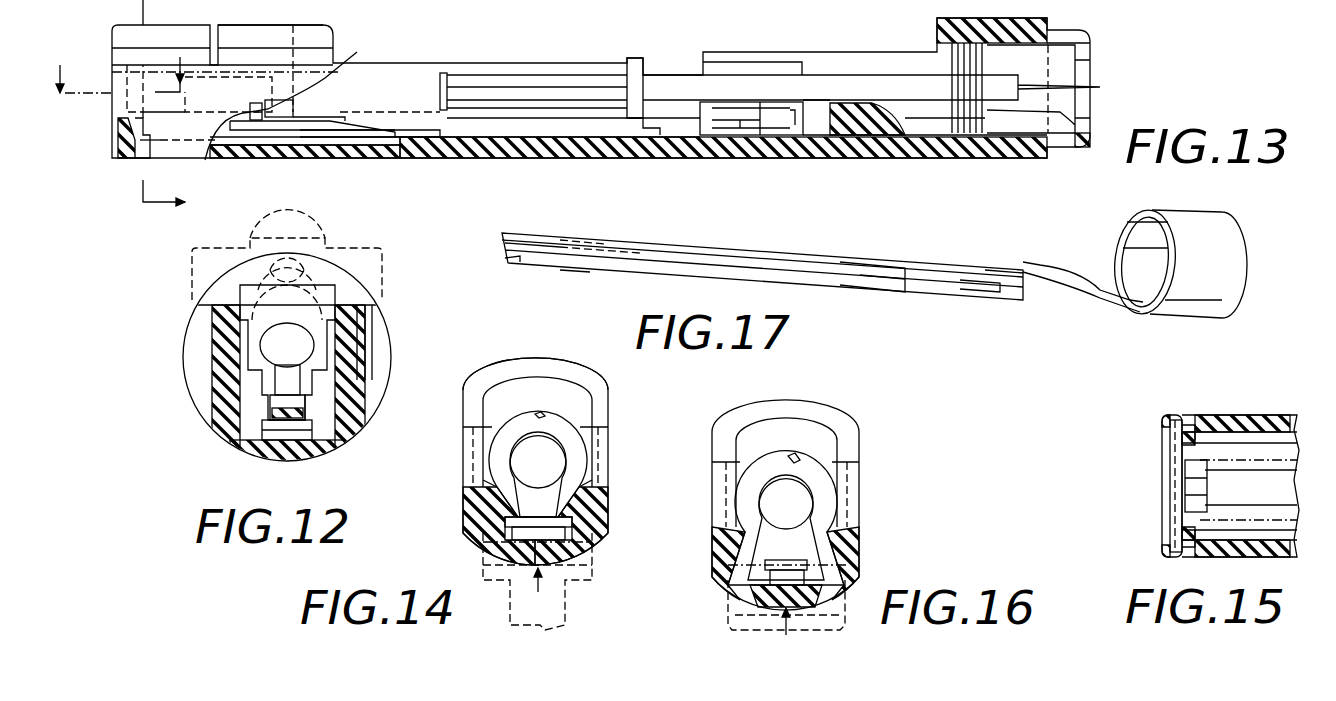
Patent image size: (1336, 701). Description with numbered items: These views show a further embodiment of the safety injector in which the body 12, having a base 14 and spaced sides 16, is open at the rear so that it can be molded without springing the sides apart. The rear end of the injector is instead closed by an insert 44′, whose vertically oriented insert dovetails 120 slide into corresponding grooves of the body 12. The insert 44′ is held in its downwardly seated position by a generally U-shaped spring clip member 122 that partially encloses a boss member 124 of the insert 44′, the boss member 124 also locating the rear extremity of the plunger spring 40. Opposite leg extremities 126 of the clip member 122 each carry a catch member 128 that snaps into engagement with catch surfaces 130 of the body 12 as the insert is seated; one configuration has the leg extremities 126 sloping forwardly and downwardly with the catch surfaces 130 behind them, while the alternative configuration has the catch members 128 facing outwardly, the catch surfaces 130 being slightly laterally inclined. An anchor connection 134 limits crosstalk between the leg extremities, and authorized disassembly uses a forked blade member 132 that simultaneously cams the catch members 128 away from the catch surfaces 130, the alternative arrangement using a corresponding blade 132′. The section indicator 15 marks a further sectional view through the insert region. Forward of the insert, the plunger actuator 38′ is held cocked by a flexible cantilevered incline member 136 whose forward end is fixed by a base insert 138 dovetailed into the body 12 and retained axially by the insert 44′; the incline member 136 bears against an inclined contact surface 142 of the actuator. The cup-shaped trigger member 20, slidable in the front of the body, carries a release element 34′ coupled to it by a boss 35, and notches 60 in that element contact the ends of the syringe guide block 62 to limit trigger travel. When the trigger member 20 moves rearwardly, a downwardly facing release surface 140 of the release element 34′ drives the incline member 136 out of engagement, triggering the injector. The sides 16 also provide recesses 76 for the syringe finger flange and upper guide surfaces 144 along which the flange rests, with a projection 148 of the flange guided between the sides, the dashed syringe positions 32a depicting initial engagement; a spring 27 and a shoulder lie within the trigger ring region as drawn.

In FIG. 12, the body 12 is at (212, 432).
In FIG. 14, the body 12 is at (463, 538).
In FIG. 15, the body 12 is at (1270, 415).
In FIG. 13, the base 14 is at (560, 158).
In FIG. 13, the section line 15 is at (118, 64).
In FIG. 14, the sides 16 is at (465, 413).
In FIG. 13, the trigger member 20 is at (1062, 30).
In FIG. 17, the trigger member 20 is at (1135, 212).
In FIG. 13, the spring 27 is at (957, 20).
In FIG. 12, the dashed lines 32a is at (360, 250).
In FIG. 13, the release element 34′ is at (430, 114).
In FIG. 17, the release element 34′ is at (635, 225).
In FIG. 17, the boss 35 is at (1155, 292).
In FIG. 13, the plunger actuator 38′ is at (335, 25).
In FIG. 12, the plunger actuator 38′ is at (212, 378).
In FIG. 13, the plunger spring 40 is at (275, 122).
In FIG. 14, the insert 44′ is at (512, 362).
In FIG. 16, the insert 44′ is at (745, 405).
In FIG. 15, the insert 44′ is at (1163, 470).
In FIG. 17, the notches 60 is at (995, 280).
In FIG. 13, the syringe guide block 62 is at (790, 58).
In FIG. 13, the recess 76 is at (668, 100).
In FIG. 15, the insert dovetails 120 is at (1176, 418).
In FIG. 14, the spring clip member 122 is at (510, 420).
In FIG. 16, the spring clip member 122 is at (752, 465).
In FIG. 14, the boss member 124 is at (556, 473).
In FIG. 16, the boss member 124 is at (805, 515).
In FIG. 15, the boss member 124 is at (1212, 482).
In FIG. 13, the leg extremities 126 is at (148, 140).
In FIG. 14, the leg extremities 126 is at (590, 495).
In FIG. 15, the leg extremities 126 is at (1190, 420).
In FIG. 13, the catch member 128 is at (137, 158).
In FIG. 14, the catch member 128 is at (490, 560).
In FIG. 16, the catch member 128 is at (722, 588).
In FIG. 13, the catch surfaces 130 is at (143, 158).
In FIG. 14, the catch surfaces 130 is at (488, 548).
In FIG. 16, the catch surfaces 130 is at (722, 565).
In FIG. 14, the forked blade member 132 is at (575, 597).
In FIG. 16, the stem 132′ is at (725, 612).
In FIG. 14, the anchor connection 134 is at (543, 414).
In FIG. 16, the anchor connection 134 is at (795, 458).
In FIG. 12, the incline member 136 is at (340, 446).
In FIG. 13, the base insert 138 is at (352, 156).
In FIG. 12, the base insert 138 is at (318, 460).
In FIG. 13, the release surface 140 is at (355, 122).
In FIG. 17, the release surface 140 is at (563, 240).
In FIG. 13, the contact surface 142 is at (300, 116).
In FIG. 13, the upper guide surfaces 144 is at (455, 68).
In FIG. 13, the projection 148 is at (628, 58).
In FIG. 12, the projection 148 is at (312, 222).